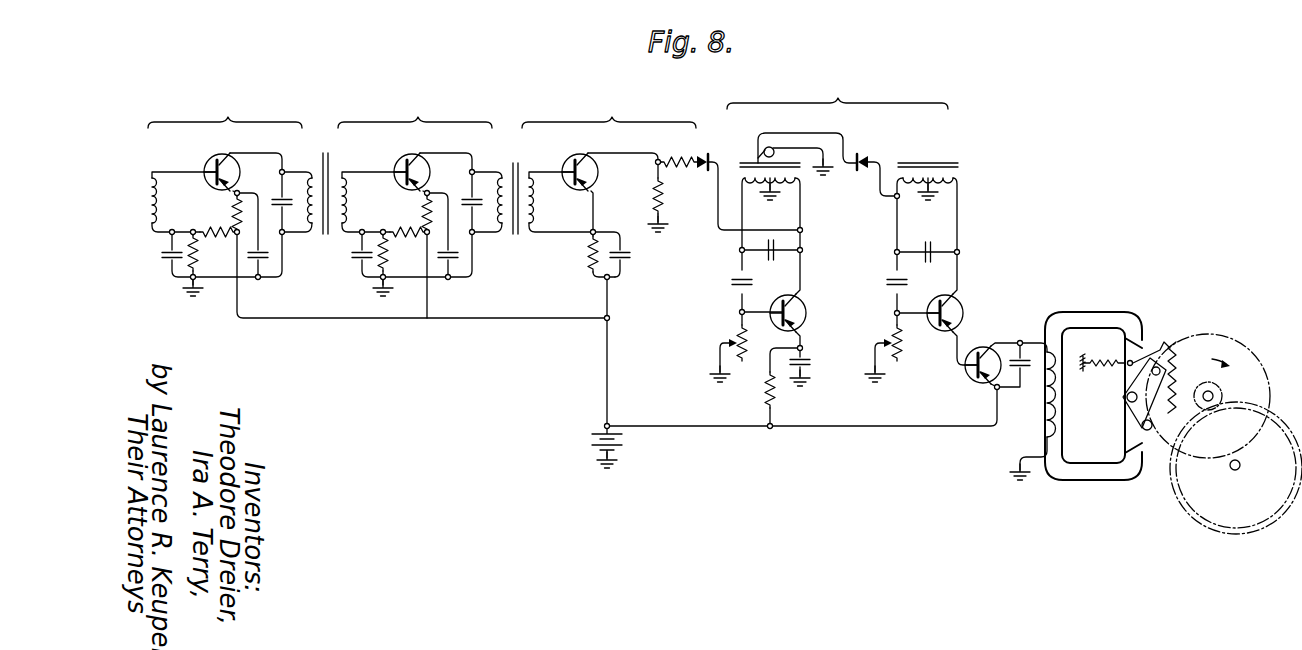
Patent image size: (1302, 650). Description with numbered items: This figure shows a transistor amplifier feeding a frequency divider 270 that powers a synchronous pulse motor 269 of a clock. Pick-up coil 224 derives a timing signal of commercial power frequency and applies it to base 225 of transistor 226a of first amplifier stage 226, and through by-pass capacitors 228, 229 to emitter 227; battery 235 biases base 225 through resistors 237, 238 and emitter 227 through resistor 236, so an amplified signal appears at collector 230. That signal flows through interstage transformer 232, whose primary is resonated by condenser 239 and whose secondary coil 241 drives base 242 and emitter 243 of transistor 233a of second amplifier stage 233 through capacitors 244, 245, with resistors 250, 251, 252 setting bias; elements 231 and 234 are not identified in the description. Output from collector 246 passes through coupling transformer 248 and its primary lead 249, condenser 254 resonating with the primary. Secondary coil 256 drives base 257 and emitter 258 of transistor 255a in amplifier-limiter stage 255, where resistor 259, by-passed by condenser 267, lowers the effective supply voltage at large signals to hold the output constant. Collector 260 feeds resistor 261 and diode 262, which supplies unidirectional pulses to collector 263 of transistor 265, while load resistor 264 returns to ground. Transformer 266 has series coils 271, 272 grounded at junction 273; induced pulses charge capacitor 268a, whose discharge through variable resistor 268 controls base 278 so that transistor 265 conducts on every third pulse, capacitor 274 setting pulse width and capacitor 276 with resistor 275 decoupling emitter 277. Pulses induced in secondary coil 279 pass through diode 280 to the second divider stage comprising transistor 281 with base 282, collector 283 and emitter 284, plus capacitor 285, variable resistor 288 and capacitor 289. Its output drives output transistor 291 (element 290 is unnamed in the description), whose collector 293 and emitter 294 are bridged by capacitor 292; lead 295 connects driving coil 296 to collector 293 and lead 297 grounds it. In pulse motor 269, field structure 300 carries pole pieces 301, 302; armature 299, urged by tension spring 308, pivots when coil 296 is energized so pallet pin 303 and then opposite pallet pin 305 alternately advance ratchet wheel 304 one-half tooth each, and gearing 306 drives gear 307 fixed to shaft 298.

The pick-up coil 224 is at (158, 196).
The base 225 is at (211, 165).
The first amplifier stage 226 is at (225, 113).
The first stage transistor 226a is at (241, 167).
The emitter 227 is at (235, 181).
The by-pass capacitor 228 is at (168, 258).
The by-pass capacitor 229 is at (262, 262).
The collector 230 is at (228, 157).
The transformer secondary coil 231 is at (310, 172).
The interstage transformer 232 is at (327, 185).
The second amplifier stage 233 is at (415, 113).
The second stage transistor 233a is at (401, 165).
The coil lead 234 is at (313, 230).
The battery 235 is at (618, 442).
The resistor 236 is at (231, 213).
The resistor 237 is at (216, 241).
The resistor 238 is at (181, 279).
The condenser 239 is at (288, 208).
The secondary coil 241 is at (348, 196).
The base 242 is at (418, 157).
The emitter 243 is at (425, 181).
The capacitor 244 is at (358, 262).
The capacitor 245 is at (452, 262).
The collector 246 is at (431, 167).
The coupling transformer 248 is at (515, 191).
The primary lead 249 is at (503, 230).
The resistor 250 is at (421, 211).
The resistor 251 is at (406, 241).
The resistor 252 is at (387, 275).
The condenser 254 is at (478, 208).
The amplifier limiter stage 255 is at (609, 113).
The third stage transistor 255a is at (599, 167).
The secondary coil 256 is at (538, 210).
The base 257 is at (573, 162).
The emitter 258 is at (592, 185).
The resistor 259 is at (588, 251).
The collector 260 is at (584, 156).
The resistor 261 is at (681, 159).
The diode 262 is at (710, 157).
The collector 263 is at (801, 301).
The load resistor 264 is at (663, 200).
The transistor 265 is at (806, 313).
The transformer 266 is at (747, 160).
The condenser 267 is at (624, 259).
The variable resistor 268 is at (738, 334).
The capacitor 268a is at (735, 281).
The synchronous pulse motor 269 is at (1112, 300).
The frequency divider 270 is at (837, 94).
The coil 271 is at (790, 184).
The coil 272 is at (750, 184).
The junction 273 is at (773, 184).
The capacitor 274 is at (776, 259).
The resistor 275 is at (775, 400).
The capacitor 276 is at (808, 360).
The emitter 277 is at (800, 325).
The base 278 is at (760, 310).
The secondary coil 279 is at (776, 149).
The diode 280 is at (861, 158).
The transistor 281 is at (961, 305).
The base 282 is at (938, 310).
The collector 283 is at (941, 300).
The emitter 284 is at (959, 321).
The capacitor 285 is at (890, 280).
The variable resistor 288 is at (902, 356).
The capacitor 289 is at (928, 244).
The transistor 290 is at (970, 371).
The output transistor 291 is at (970, 380).
The capacitor 292 is at (1020, 380).
The collector 293 is at (1016, 342).
The emitter 294 is at (986, 386).
The lead 295 is at (1036, 330).
The driving coil 296 is at (1062, 408).
The lead 297 is at (1018, 460).
The shaft 298 is at (1235, 470).
The armature 299 is at (1153, 347).
The field structure 300 is at (1133, 314).
The pole piece 301 is at (1137, 339).
The pole piece 302 is at (1134, 470).
The pallet pin 303 is at (1160, 372).
The ratchet wheel 304 is at (1232, 348).
The pallet pin 305 is at (1158, 400).
The gearing 306 is at (1218, 392).
The gear 307 is at (1196, 498).
The tension spring 308 is at (1108, 368).